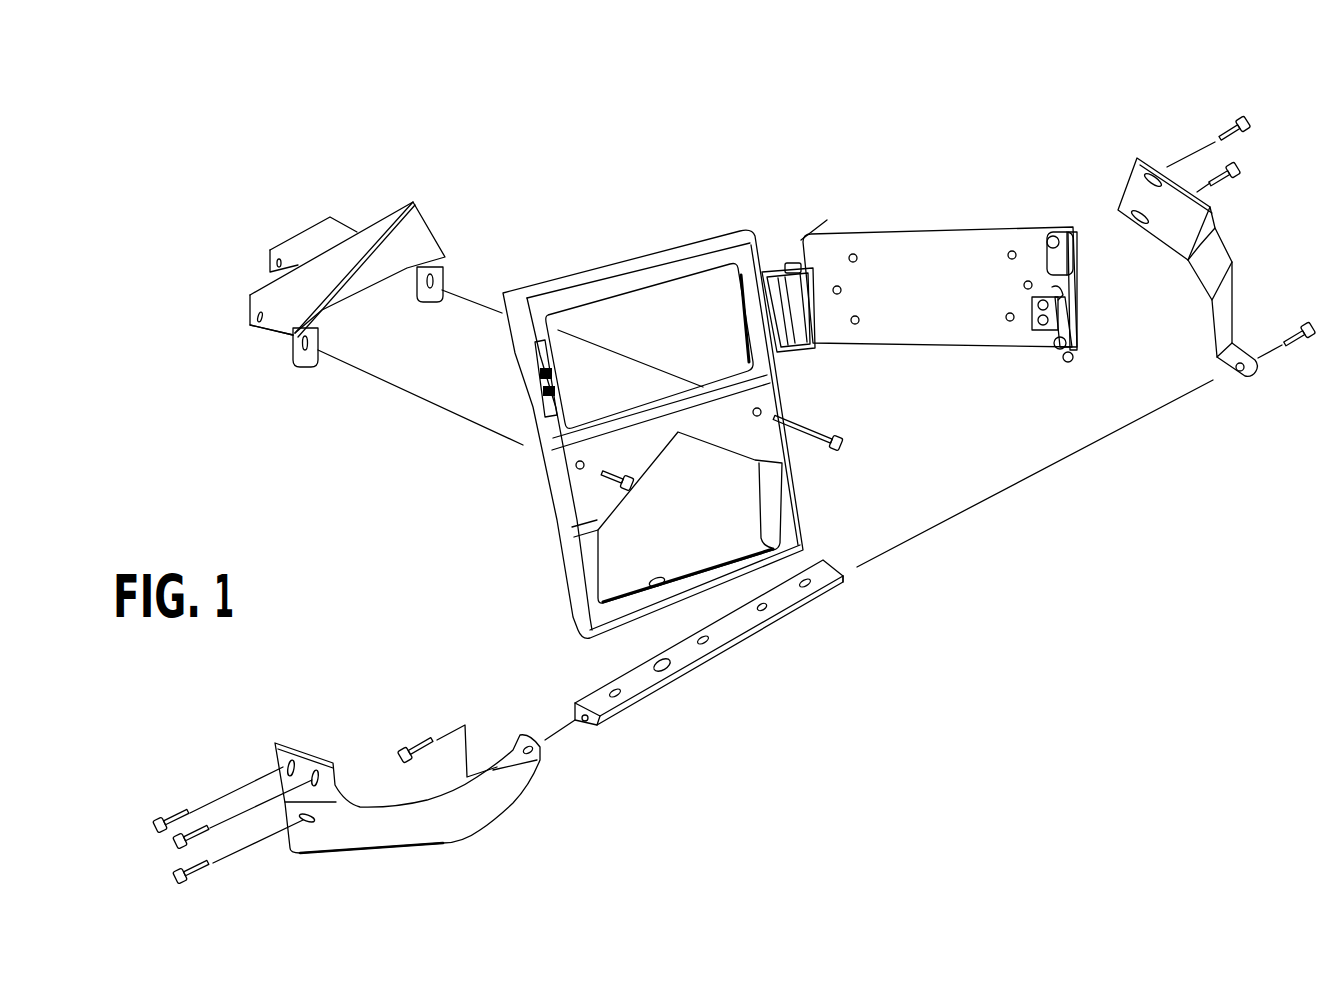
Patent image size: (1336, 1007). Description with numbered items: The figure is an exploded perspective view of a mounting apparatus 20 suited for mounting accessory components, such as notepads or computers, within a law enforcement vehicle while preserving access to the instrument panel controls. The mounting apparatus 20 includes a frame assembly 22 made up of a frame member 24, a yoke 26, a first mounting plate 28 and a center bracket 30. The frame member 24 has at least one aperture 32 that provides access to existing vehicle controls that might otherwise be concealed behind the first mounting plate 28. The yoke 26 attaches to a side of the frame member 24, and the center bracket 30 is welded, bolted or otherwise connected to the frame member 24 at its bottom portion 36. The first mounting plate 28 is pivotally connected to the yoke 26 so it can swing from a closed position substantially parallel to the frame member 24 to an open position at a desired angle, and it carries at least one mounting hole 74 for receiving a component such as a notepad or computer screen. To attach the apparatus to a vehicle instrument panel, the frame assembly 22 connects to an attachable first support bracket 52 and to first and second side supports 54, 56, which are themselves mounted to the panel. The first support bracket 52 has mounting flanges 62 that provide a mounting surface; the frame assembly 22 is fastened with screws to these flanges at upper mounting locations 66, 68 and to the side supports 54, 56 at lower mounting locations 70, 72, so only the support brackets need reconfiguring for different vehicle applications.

The mounting apparatus 20 is at (1016, 120).
The frame assembly 22 is at (896, 202).
The frame member 24 is at (773, 393).
The yoke 26 is at (778, 262).
The first mounting plate 28 is at (995, 240).
The center bracket 30 is at (803, 605).
The aperture 32 is at (680, 341).
The bottom portion 36 is at (753, 533).
The first support bracket 52 is at (240, 292).
The first side support 54 is at (1218, 257).
The second side support 56 is at (390, 837).
The mounting flanges 62 is at (442, 290).
The upper mounting location 66 is at (297, 357).
The tab 68 is at (433, 277).
The lower mounting location 70 is at (517, 748).
The lower mounting location 72 is at (845, 578).
The mounting hole 74 is at (1024, 285).